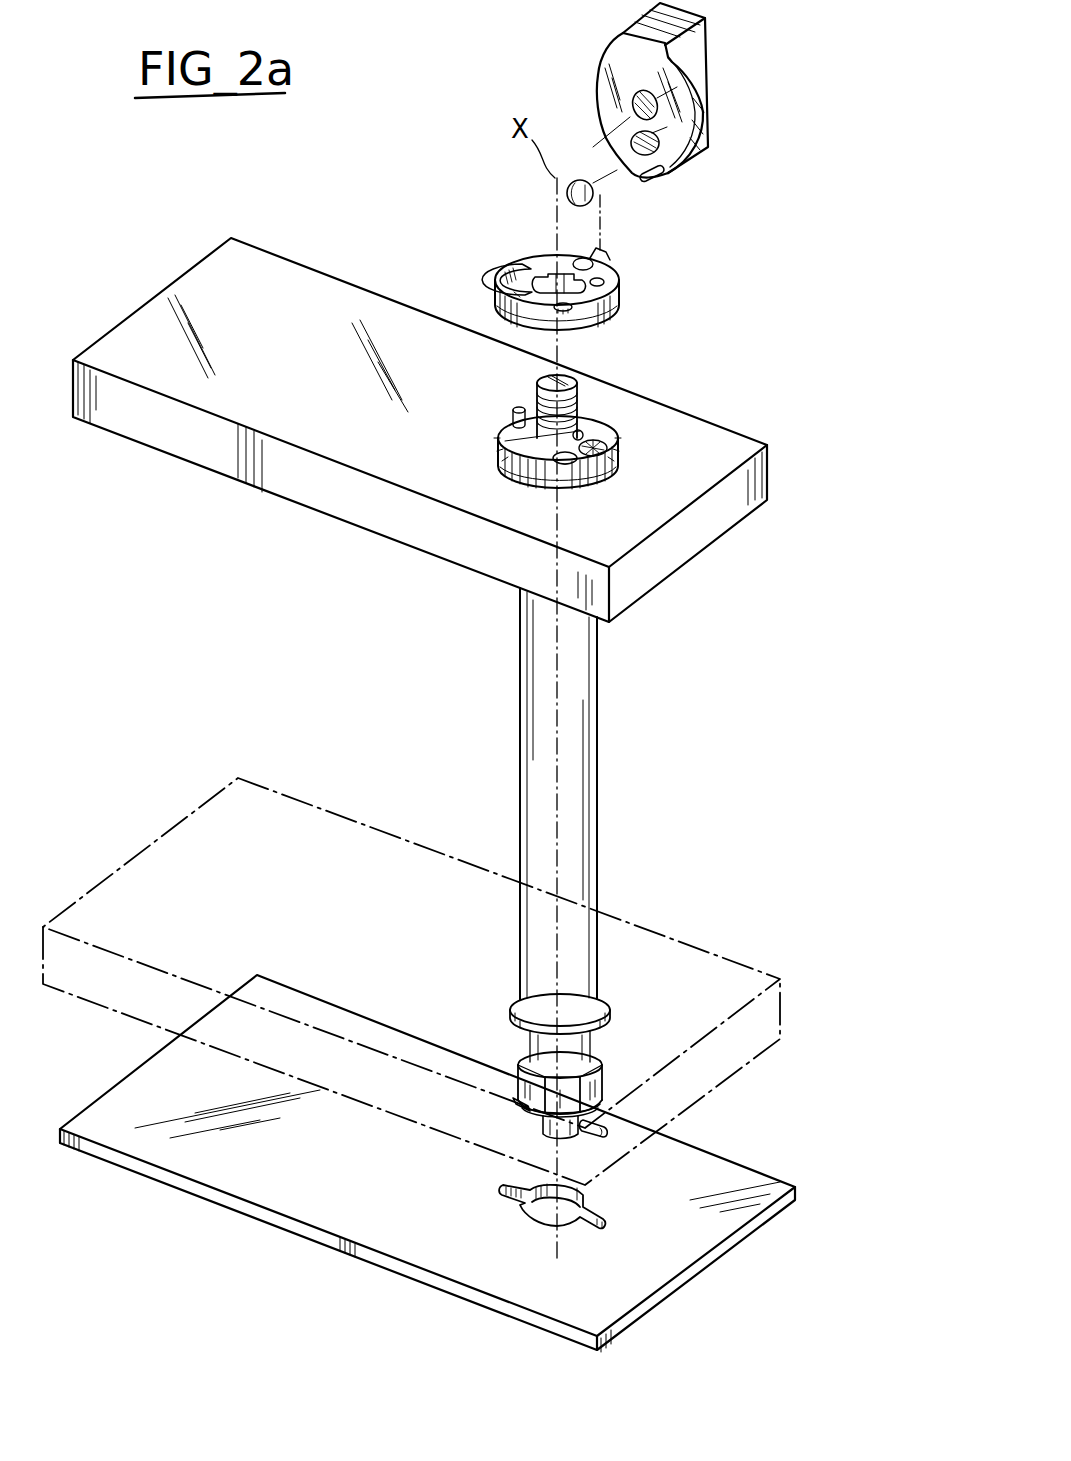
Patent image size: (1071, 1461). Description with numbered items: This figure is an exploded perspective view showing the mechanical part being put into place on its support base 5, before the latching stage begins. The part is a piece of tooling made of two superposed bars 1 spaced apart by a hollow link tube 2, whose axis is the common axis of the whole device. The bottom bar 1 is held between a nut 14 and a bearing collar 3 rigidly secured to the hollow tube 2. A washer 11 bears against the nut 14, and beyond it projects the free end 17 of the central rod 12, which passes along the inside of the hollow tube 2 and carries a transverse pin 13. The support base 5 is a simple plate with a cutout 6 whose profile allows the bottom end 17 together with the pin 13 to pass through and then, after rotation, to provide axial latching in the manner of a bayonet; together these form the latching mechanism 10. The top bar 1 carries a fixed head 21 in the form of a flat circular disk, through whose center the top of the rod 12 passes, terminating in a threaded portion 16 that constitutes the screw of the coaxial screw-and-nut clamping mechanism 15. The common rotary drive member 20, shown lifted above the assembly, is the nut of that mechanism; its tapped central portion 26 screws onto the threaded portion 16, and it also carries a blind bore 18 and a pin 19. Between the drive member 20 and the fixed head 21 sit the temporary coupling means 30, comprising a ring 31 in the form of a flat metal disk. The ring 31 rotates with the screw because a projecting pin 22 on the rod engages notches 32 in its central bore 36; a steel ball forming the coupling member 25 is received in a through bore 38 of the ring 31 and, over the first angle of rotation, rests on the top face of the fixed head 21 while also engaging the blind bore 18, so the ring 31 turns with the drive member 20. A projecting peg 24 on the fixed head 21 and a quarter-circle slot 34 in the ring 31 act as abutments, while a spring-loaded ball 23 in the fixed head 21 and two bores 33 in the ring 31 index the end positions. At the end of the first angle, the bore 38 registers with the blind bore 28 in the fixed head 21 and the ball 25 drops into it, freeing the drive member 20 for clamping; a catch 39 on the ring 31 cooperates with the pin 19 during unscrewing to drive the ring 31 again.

The bars 1 is at (285, 482).
The hollow link tube 2 is at (580, 778).
The bearing collar 3 is at (607, 1000).
The support base 5 is at (245, 1188).
The cutout 6 is at (590, 1202).
The latching mechanism 10 is at (496, 1103).
The washer 11 is at (605, 1105).
The rod 12 is at (500, 440).
The transverse pin 13 is at (600, 1135).
The nut 14 is at (605, 1068).
The clamping mechanism 15 is at (586, 391).
The threaded portion 16 is at (580, 418).
The free end 17 is at (540, 1132).
The blind bore 18 is at (660, 130).
The pin 19 is at (660, 180).
The common rotary drive member 20 is at (712, 53).
The fixed head 21 is at (508, 480).
The projecting pin 22 is at (583, 433).
The spring-loaded ball 23 is at (567, 465).
The projecting peg 24 is at (513, 413).
The coupling member 25 is at (594, 196).
The tapped central portion 26 is at (640, 95).
The blind bore 28 is at (610, 446).
The temporary coupling means 30 is at (495, 293).
The ring 31 is at (525, 332).
The notches 32 is at (538, 274).
The bores 33 is at (608, 288).
The circular slot 34 is at (518, 270).
The central bore 36 is at (560, 282).
The through bore 38 is at (608, 267).
The catch 39 is at (604, 254).